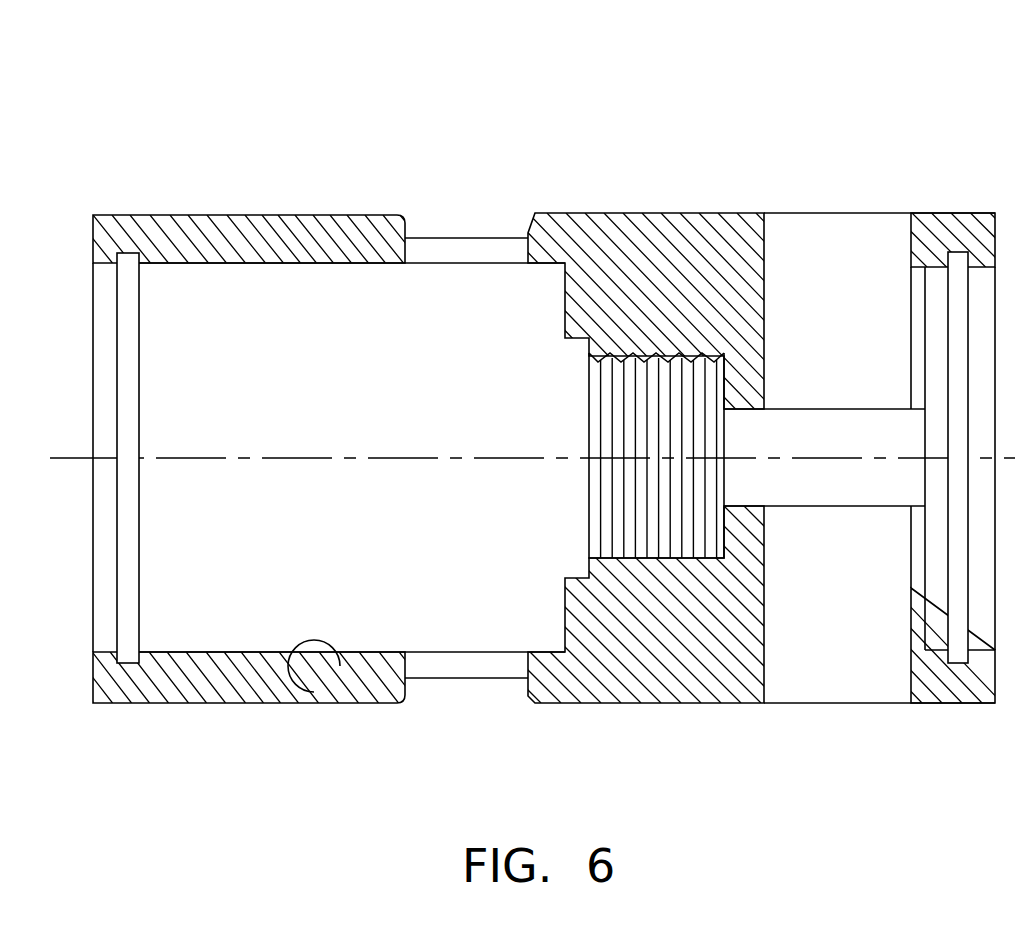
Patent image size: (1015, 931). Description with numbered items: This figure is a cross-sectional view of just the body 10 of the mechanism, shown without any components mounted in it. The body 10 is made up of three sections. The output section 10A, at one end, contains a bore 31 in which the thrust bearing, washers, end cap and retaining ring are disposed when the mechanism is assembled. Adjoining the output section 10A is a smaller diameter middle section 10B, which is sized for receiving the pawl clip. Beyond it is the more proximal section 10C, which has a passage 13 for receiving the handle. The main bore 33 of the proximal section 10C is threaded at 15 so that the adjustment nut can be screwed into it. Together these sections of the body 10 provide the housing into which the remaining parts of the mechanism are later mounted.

The body 10 is at (585, 137).
The output section 10A is at (272, 215).
The middle section 10B is at (483, 238).
The proximal section 10C is at (750, 212).
The passage 13 is at (910, 248).
The threads 15 is at (678, 545).
The bore 31 is at (307, 691).
The main bore 33 is at (610, 515).